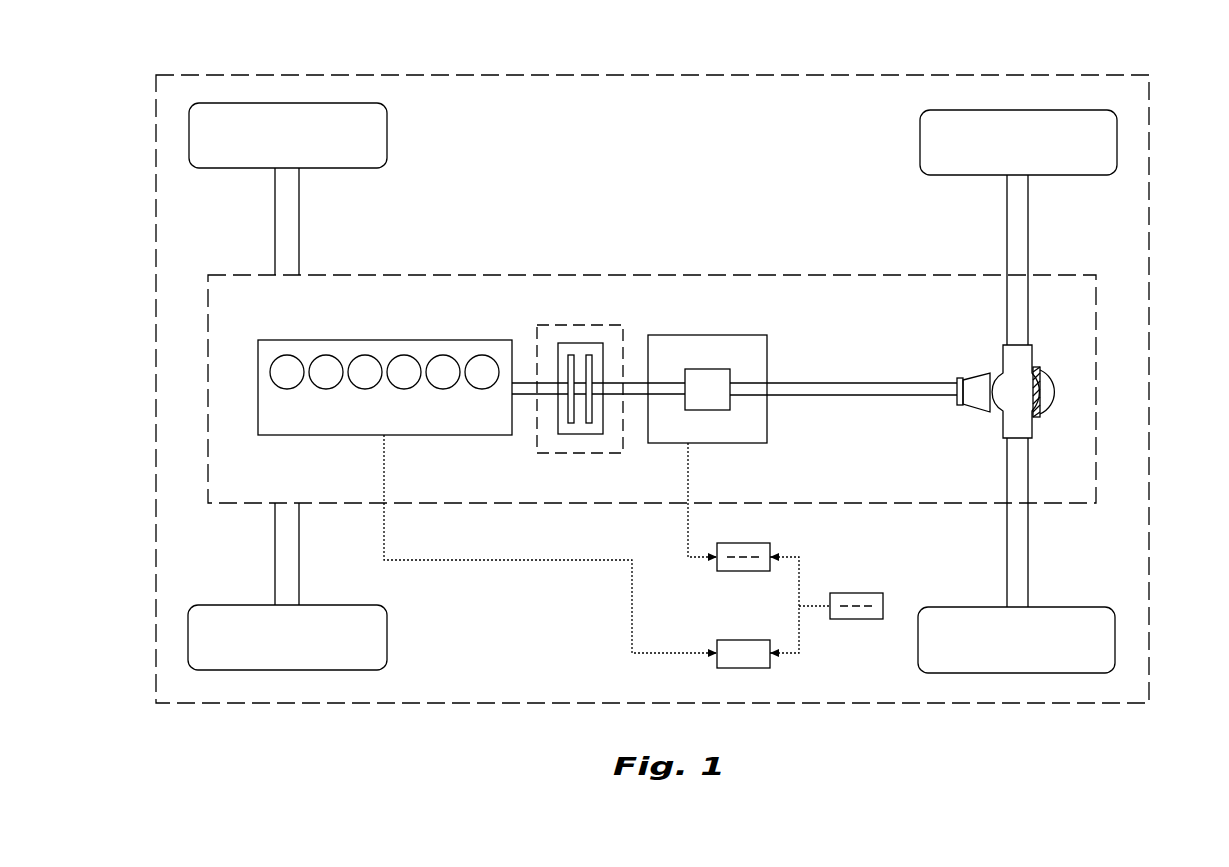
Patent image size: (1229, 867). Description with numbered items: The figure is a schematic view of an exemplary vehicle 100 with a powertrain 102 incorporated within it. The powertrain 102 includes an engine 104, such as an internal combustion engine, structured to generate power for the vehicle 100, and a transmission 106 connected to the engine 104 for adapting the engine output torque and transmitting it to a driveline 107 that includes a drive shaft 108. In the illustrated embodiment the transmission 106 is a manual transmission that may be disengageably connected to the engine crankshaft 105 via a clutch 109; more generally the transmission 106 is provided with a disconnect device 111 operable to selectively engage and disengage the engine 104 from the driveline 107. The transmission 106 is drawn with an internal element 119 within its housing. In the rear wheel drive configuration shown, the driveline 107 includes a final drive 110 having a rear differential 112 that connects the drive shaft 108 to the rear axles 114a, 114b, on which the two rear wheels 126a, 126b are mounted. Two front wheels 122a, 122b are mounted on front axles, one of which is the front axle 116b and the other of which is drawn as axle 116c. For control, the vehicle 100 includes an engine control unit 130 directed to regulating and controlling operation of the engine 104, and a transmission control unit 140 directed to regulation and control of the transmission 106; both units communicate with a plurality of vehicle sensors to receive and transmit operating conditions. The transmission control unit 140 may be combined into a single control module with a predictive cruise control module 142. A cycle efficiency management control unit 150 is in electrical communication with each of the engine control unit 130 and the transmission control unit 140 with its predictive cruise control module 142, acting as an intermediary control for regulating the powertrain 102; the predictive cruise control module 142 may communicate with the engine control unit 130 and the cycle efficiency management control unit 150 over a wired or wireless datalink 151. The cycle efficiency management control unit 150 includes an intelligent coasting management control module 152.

The vehicle 100 is at (882, 76).
The powertrain 102 is at (855, 277).
The engine 104 is at (385, 387).
The engine crankshaft 105 is at (517, 396).
The transmission 106 is at (722, 445).
The driveline 107 is at (810, 302).
The drive shaft 108 is at (825, 397).
The clutch 109 is at (580, 435).
The final drive 110 is at (1063, 400).
The disconnect device 111 is at (545, 326).
The rear differential 112 is at (1015, 387).
The rear axle 114a is at (1029, 228).
The rear axle 114b is at (1028, 560).
The front axle 116b is at (275, 572).
The front axle 116c is at (299, 208).
The gear set 119 is at (709, 369).
The front wheel 122a is at (288, 135).
The front wheel 122b is at (287, 637).
The rear wheel 126a is at (1018, 142).
The rear wheel 126b is at (1016, 640).
The engine control unit 130 is at (738, 640).
The transmission control unit 140 is at (757, 543).
The predictive cruise control module 142 is at (733, 572).
The cycle efficiency management control unit 150 is at (881, 594).
The datalink 151 is at (800, 570).
The intelligent coasting management control module 152 is at (855, 620).